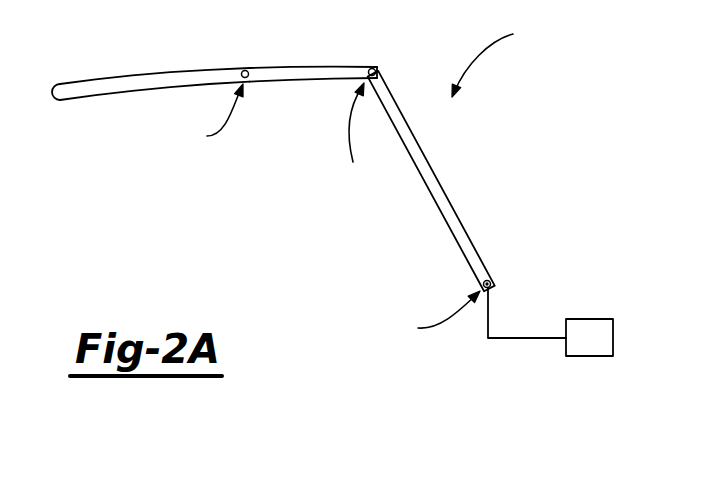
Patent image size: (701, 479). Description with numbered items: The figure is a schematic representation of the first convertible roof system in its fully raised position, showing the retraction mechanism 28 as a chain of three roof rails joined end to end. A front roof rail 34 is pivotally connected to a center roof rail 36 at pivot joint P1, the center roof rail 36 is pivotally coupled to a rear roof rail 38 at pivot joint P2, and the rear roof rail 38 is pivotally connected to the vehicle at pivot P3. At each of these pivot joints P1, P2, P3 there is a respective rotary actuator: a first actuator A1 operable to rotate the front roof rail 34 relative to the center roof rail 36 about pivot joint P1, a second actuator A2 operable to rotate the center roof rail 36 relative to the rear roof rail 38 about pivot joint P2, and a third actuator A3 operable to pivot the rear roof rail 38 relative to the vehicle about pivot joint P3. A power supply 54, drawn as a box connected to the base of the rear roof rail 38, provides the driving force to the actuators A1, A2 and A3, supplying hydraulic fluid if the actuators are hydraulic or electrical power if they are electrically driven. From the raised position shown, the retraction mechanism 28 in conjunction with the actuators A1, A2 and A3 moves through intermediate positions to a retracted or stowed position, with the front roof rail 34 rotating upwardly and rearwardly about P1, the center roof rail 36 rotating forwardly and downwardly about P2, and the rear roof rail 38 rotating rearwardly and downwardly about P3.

The retraction mechanism 28 is at (496, 56).
The front roof rail 34 is at (107, 88).
The center roof rail 36 is at (300, 78).
The rear roof rail 38 is at (457, 224).
The power supply 54 is at (588, 323).
The pivot joint P1 is at (246, 70).
The pivot joint P2 is at (378, 68).
The pivot joint P3 is at (492, 282).
The first rotary actuator A1 is at (213, 119).
The second rotary actuator A2 is at (362, 140).
The third rotary actuator A3 is at (433, 317).